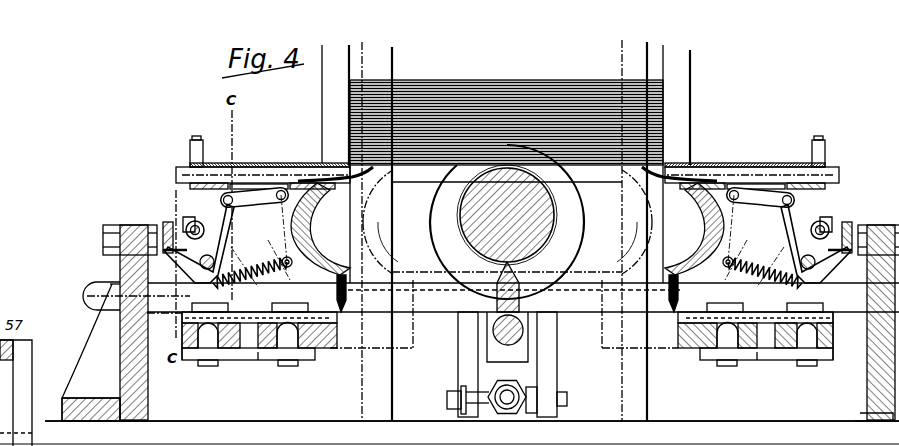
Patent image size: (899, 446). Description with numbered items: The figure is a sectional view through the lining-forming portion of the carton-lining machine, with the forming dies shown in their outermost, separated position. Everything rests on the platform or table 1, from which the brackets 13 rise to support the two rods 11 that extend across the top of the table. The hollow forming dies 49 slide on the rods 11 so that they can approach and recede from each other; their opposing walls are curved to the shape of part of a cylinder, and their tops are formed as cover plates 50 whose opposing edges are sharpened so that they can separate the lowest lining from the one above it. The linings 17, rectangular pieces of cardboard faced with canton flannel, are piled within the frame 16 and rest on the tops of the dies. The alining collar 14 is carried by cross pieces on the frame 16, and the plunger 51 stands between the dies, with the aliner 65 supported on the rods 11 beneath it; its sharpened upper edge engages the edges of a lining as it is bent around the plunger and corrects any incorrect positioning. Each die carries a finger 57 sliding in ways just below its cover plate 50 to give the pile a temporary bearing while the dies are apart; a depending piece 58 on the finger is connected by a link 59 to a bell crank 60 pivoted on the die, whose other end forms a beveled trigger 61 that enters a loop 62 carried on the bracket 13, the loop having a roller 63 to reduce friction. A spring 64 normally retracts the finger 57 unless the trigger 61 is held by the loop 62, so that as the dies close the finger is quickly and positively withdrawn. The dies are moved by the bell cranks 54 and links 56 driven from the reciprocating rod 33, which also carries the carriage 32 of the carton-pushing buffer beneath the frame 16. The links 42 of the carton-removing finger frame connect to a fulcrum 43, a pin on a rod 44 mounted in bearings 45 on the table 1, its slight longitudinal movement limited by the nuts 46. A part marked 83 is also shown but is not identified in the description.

The platform or table 1 is at (278, 413).
The rods 11 is at (491, 297).
The brackets 13 is at (104, 357).
The alining collar 14 is at (507, 222).
The frame 16 is at (403, 233).
The linings 17 is at (506, 114).
The carriage 32 is at (500, 351).
The rod 33 is at (523, 330).
The links 42 is at (545, 366).
The fulcrum 43 is at (567, 399).
The rod 44 is at (500, 397).
The bearings 45 is at (470, 405).
The nuts 46 is at (540, 390).
The forming dies 49 is at (320, 247).
The plates 50 is at (268, 163).
The plunger 51 is at (540, 212).
The bell cranks 54 is at (207, 352).
The links 56 is at (258, 360).
The fingers 57 is at (338, 175).
The depending piece 58 is at (286, 183).
The link 59 is at (256, 227).
The bell crank 60 is at (222, 236).
The finger or trigger 61 is at (183, 222).
The loop 62 is at (165, 225).
The roller 63 is at (200, 224).
The spring 64 is at (260, 280).
The aliner 65 is at (520, 277).
The stop 83 is at (190, 148).